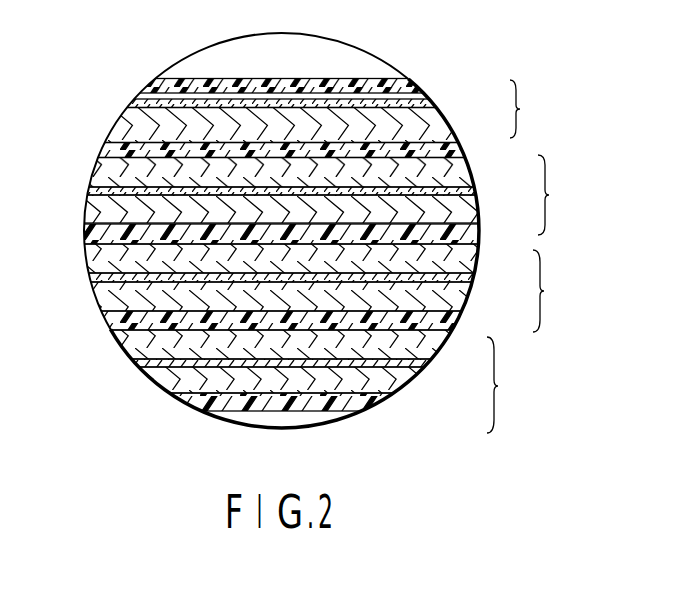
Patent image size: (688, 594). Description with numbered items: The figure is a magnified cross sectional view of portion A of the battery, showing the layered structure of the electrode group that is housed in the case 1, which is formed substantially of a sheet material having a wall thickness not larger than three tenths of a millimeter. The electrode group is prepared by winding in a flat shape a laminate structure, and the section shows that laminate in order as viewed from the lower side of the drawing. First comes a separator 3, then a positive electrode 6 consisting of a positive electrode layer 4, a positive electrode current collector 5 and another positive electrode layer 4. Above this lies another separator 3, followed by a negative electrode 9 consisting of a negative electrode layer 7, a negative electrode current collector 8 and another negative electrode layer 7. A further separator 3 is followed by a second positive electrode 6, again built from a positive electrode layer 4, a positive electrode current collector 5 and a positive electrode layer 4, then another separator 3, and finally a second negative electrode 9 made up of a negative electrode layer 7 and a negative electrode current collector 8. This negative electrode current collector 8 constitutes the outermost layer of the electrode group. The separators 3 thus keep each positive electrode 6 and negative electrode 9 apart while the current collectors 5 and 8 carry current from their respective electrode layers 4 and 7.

The case 1 is at (393, 87).
The separator 3 is at (107, 148).
The positive electrode layer 4 is at (455, 173).
The positive electrode current collector 5 is at (467, 195).
The positive electrode 6 is at (525, 294).
The negative electrode layer 7 is at (438, 133).
The negative electrode current collector 8 is at (422, 107).
The negative electrode 9 is at (534, 206).
The portion A is at (187, 72).